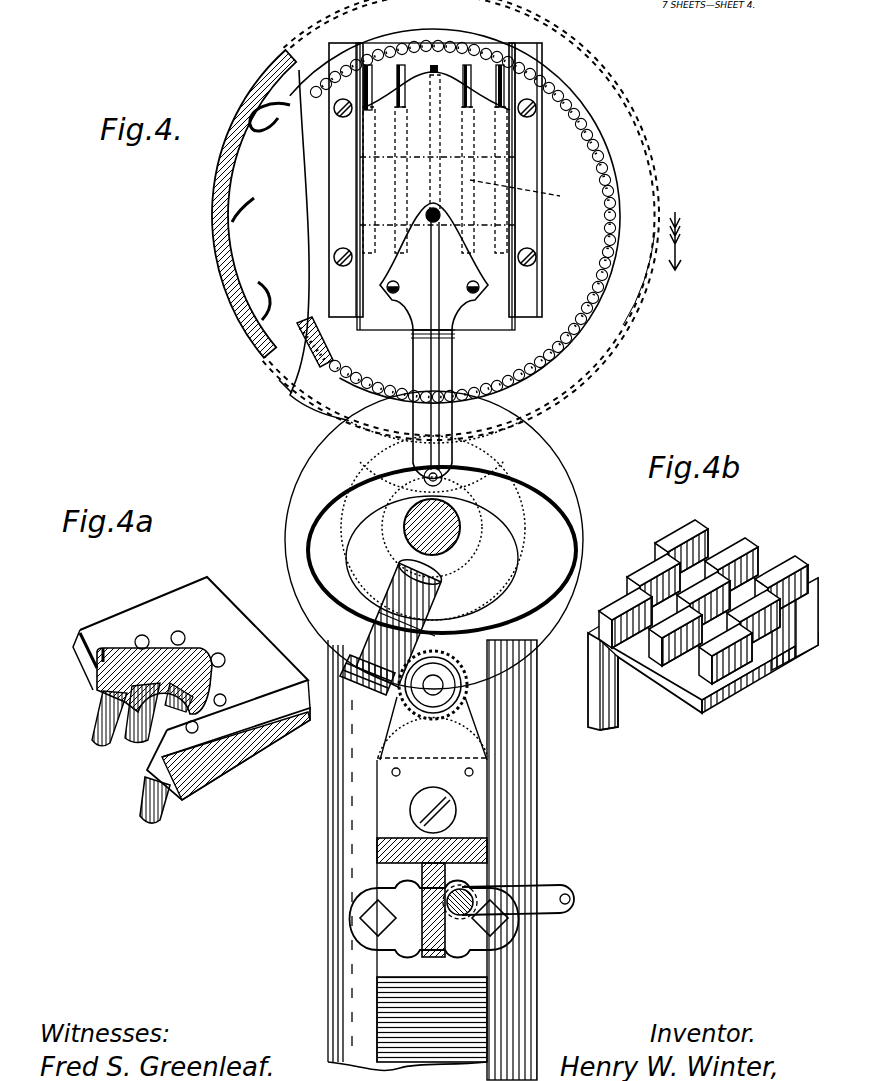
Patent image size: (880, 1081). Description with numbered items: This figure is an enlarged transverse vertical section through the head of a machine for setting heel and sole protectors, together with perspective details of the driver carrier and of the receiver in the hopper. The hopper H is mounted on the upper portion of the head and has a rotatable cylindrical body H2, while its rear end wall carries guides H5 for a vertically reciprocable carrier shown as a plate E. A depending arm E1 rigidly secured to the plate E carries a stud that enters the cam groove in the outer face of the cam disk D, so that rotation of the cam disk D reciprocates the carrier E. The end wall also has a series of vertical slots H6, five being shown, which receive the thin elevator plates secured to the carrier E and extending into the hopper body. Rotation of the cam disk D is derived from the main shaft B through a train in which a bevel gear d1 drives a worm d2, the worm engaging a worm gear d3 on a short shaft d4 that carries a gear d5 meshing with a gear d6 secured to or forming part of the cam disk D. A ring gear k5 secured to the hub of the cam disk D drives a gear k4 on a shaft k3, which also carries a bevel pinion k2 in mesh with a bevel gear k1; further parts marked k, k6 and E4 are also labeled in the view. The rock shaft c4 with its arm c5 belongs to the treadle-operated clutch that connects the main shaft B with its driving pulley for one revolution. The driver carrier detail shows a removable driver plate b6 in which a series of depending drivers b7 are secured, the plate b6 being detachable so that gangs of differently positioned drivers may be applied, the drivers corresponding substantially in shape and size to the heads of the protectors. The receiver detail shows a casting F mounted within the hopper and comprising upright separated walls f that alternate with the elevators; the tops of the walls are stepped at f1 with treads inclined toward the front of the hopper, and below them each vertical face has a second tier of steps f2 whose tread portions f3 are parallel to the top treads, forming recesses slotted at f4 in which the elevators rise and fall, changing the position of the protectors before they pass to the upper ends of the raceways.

In FIG. 4, the ring gear segment k is at (278, 338).
In FIG. 4, the bevel gear k1 is at (590, 168).
In FIG. 4, the bevel pinion k2 is at (228, 174).
In FIG. 4, the shaft k3 is at (636, 320).
In FIG. 4, the gear k4 is at (260, 282).
In FIG. 4, the ring gear k5 is at (540, 50).
In FIG. 4, the slotted plate k6 is at (372, 86).
In FIG. 4, the carrier E is at (502, 281).
In FIG. 4, the depending arm E1 is at (450, 358).
In FIG. 4, the plate E4 is at (470, 186).
In FIG. 4, the hopper H is at (259, 245).
In FIG. 4, the cylindrical body H2 is at (338, 916).
In FIG. 4, the guides H5 is at (387, 852).
In FIG. 4, the vertical slots H6 is at (380, 625).
In FIG. 4, the main shaft B is at (457, 520).
In FIG. 4, the cam disk D is at (560, 497).
In FIG. 4, the bevel gear d1 is at (547, 590).
In FIG. 4, the worm d2 is at (357, 662).
In FIG. 4, the worm gear d3 is at (450, 657).
In FIG. 4, the short shaft d4 is at (452, 712).
In FIG. 4, the gear d5 is at (500, 706).
In FIG. 4, the gear d6 is at (454, 593).
In FIG. 4, the rock shaft c4 is at (478, 890).
In FIG. 4, the arm c5 is at (552, 896).
In FIG. 4A, the driver plate b6 is at (188, 620).
In FIG. 4A, the drivers b7 is at (162, 818).
In FIG. 4B, the receiver casting F is at (703, 654).
In FIG. 4B, the upright separated walls f is at (705, 540).
In FIG. 4B, the stepped tops f1 is at (680, 555).
In FIG. 4B, the second tier of steps f2 is at (725, 545).
In FIG. 4B, the tread portions f3 is at (790, 677).
In FIG. 4B, the slots f4 is at (757, 540).